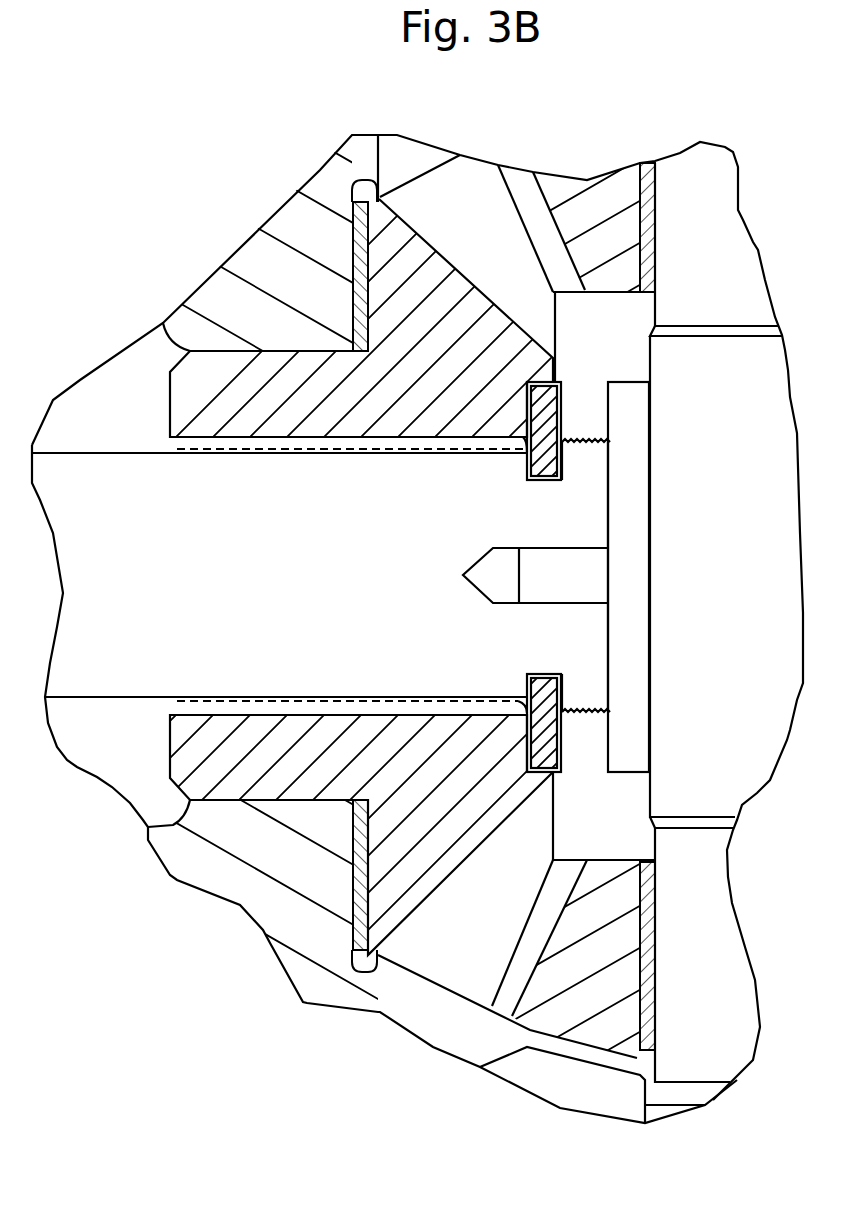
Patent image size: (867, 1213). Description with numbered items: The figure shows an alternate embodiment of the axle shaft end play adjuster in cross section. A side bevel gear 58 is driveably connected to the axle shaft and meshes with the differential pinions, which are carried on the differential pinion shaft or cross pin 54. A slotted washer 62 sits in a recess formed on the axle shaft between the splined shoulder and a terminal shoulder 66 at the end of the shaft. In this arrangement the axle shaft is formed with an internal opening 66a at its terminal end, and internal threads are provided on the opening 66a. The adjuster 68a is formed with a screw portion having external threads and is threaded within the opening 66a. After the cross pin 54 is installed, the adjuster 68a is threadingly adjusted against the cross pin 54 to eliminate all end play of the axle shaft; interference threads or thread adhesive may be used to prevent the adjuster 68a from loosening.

The differential pinion shaft or cross pin 54 is at (745, 671).
The side bevel gear 58 is at (453, 331).
The slotted washer 62 is at (543, 482).
The terminal shoulder 66 is at (585, 510).
The internal opening 66a is at (488, 568).
The adjuster 68a is at (624, 410).